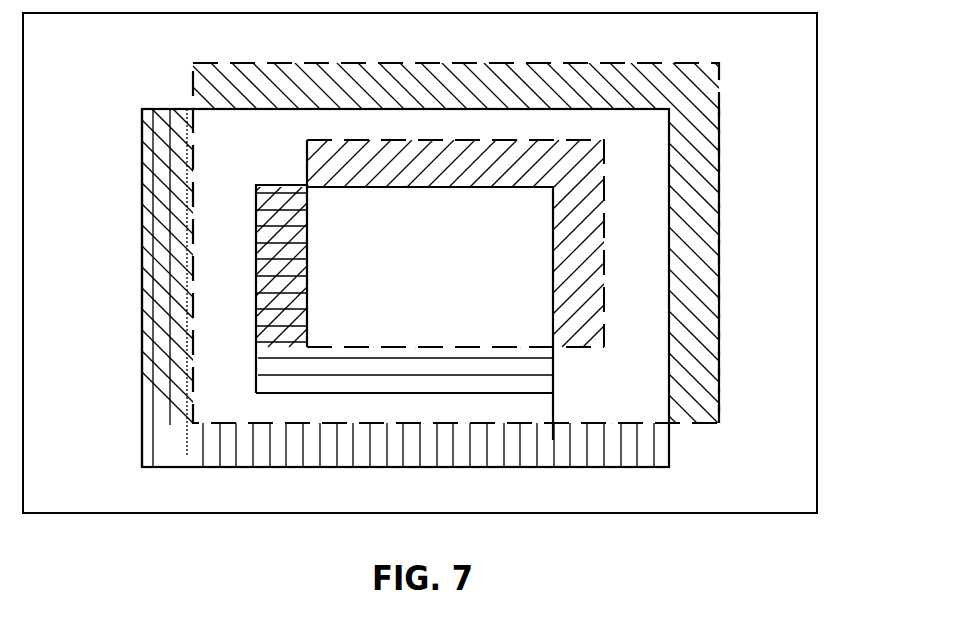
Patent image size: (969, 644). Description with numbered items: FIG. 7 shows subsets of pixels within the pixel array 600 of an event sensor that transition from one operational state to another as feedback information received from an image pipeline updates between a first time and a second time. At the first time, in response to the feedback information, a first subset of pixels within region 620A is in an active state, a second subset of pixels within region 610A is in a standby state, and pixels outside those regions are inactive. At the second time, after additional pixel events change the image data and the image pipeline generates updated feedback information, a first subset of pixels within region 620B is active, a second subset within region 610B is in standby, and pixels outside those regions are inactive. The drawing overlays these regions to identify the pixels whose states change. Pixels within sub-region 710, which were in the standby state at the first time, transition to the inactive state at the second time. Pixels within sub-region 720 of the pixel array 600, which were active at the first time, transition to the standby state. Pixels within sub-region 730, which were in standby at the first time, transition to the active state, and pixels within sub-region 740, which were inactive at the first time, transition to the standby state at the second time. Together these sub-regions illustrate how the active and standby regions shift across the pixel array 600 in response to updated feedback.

The pixel array 600 is at (817, 243).
The region 610A is at (142, 373).
The region 610B is at (718, 262).
The region 620A is at (305, 185).
The region 620B is at (567, 346).
The sub-region 710 is at (405, 288).
The sub-region 720 is at (404, 375).
The sub-region 730 is at (455, 290).
The sub-region 740 is at (484, 243).